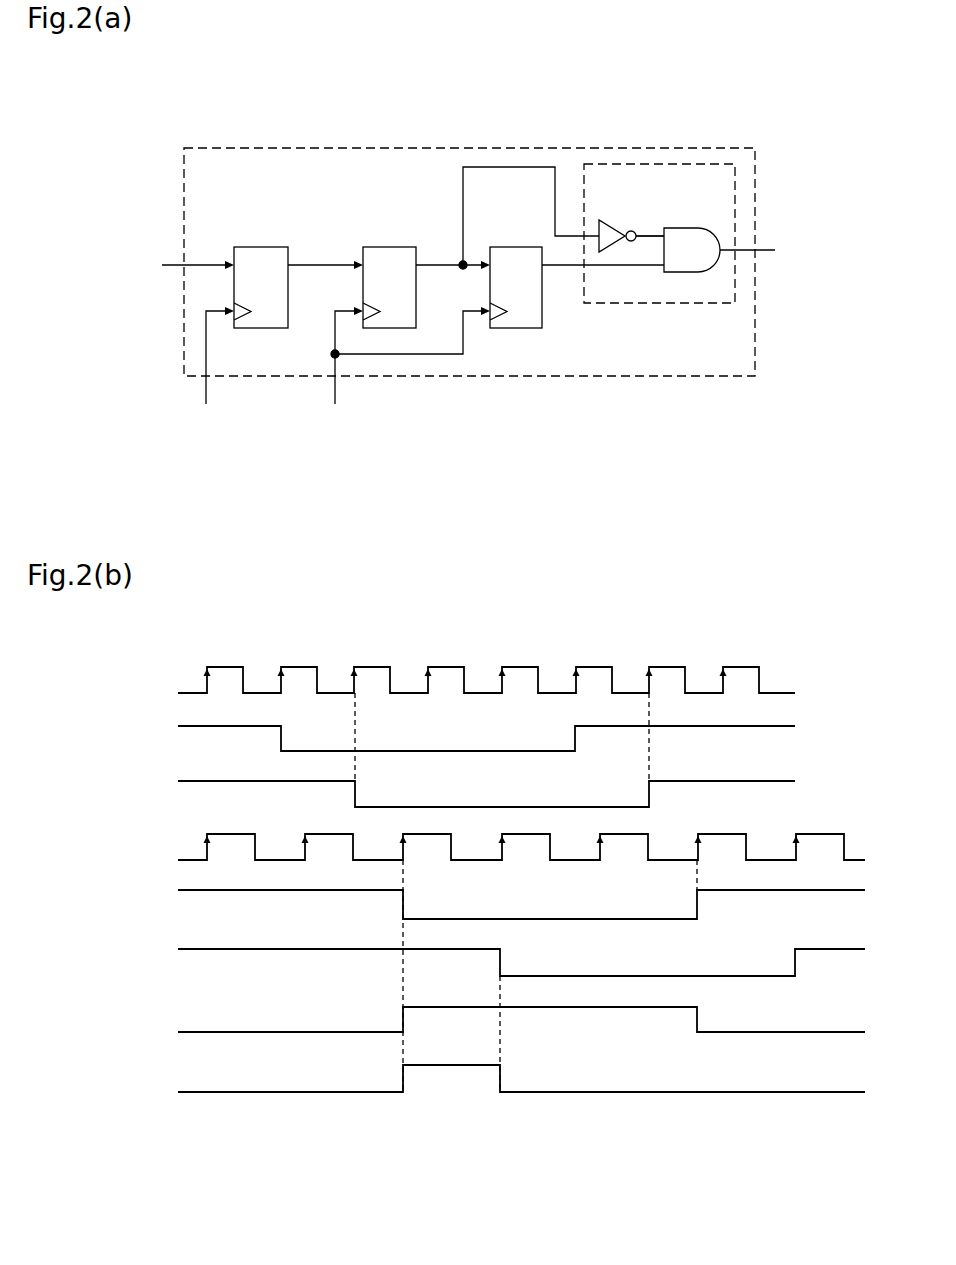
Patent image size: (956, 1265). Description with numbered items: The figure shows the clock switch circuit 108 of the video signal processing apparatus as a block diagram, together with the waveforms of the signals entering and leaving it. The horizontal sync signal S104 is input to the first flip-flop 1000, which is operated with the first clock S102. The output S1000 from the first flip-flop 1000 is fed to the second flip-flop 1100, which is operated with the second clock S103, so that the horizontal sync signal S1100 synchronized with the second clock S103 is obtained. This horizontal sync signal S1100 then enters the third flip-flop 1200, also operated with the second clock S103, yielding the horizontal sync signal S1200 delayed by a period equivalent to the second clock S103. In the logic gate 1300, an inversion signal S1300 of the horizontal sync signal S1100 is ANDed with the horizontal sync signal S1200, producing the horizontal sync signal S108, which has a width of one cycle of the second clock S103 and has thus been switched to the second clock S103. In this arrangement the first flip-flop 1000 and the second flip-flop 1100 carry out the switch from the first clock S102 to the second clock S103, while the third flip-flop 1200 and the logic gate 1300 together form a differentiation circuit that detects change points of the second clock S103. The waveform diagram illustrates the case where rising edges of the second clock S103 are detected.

In FIG. 2A, the clock switch circuit 108 is at (701, 147).
In FIG. 2A, the first flip-flop 1000 is at (249, 246).
In FIG. 2A, the second flip-flop 1100 is at (372, 246).
In FIG. 2A, the third flip-flop 1200 is at (514, 246).
In FIG. 2A, the logic gate 1300 is at (693, 304).
In FIG. 2A, the first clock S102 is at (208, 371).
In FIG. 2B, the first clock S102 is at (449, 680).
In FIG. 2A, the second clock S103 is at (400, 371).
In FIG. 2B, the second clock S103 is at (484, 849).
In FIG. 2A, the horizontal sync signal S104 is at (168, 265).
In FIG. 2B, the horizontal sync signal S104 is at (449, 738).
In FIG. 2A, the horizontal sync signal S108 is at (775, 249).
In FIG. 2B, the horizontal sync signal S108 is at (484, 1080).
In FIG. 2A, the output from the first flip-flop S1000 is at (330, 264).
In FIG. 2B, the output from the first flip-flop S1000 is at (449, 794).
In FIG. 2A, the horizontal sync signal S1100 is at (440, 264).
In FIG. 2B, the horizontal sync signal S1100 is at (484, 906).
In FIG. 2A, the horizontal sync signal S1200 is at (553, 268).
In FIG. 2B, the horizontal sync signal S1200 is at (484, 964).
In FIG. 2A, the inversion signal S1300 is at (654, 235).
In FIG. 2B, the inversion signal S1300 is at (484, 1022).